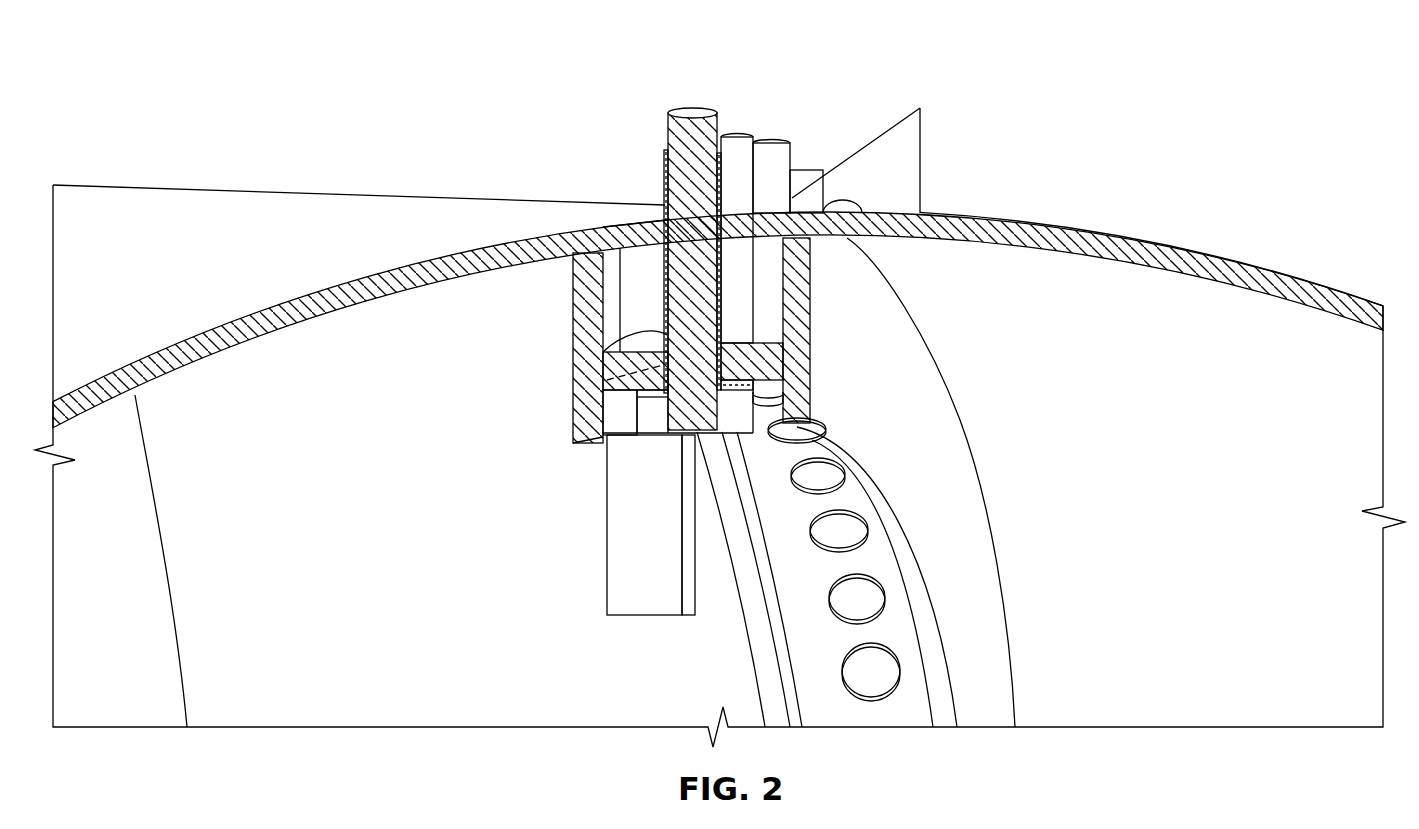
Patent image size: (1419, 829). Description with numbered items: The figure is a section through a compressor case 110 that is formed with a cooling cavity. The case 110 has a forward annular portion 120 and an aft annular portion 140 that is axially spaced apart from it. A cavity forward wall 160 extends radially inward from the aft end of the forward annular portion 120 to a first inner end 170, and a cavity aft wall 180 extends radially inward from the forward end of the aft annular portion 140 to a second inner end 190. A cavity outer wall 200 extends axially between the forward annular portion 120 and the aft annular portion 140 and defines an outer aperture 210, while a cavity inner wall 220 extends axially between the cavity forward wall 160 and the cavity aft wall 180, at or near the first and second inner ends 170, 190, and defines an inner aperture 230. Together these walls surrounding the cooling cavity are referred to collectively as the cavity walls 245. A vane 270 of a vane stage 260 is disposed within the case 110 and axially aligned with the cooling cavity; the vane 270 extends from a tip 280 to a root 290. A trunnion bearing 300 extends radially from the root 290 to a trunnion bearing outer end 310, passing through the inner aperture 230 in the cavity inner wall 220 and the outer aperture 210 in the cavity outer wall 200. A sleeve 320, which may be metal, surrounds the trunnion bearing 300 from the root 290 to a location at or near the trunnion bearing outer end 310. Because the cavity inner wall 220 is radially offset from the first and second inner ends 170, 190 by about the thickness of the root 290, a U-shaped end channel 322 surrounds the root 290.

The case 110 is at (1190, 247).
The forward annular portion 120 is at (270, 238).
The aft annular portion 140 is at (1058, 238).
The cavity forward wall 160 is at (592, 310).
The first inner end 170 is at (578, 446).
The cavity aft wall 180 is at (907, 318).
The second inner end 190 is at (852, 476).
The cavity outer wall 200 is at (795, 232).
The outer aperture 210 is at (662, 212).
The cavity inner wall 220 is at (800, 376).
The inner aperture 230 is at (760, 408).
The cavity walls 245 is at (865, 402).
The vane stage 260 is at (781, 128).
The vane 270 is at (672, 617).
The tip 280 is at (612, 540).
The root 290 is at (640, 412).
The trunnion bearing 300 is at (696, 116).
The trunnion bearing outer end 310 is at (682, 108).
The sleeve 320 is at (663, 160).
The U-shaped end channel 322 is at (762, 420).